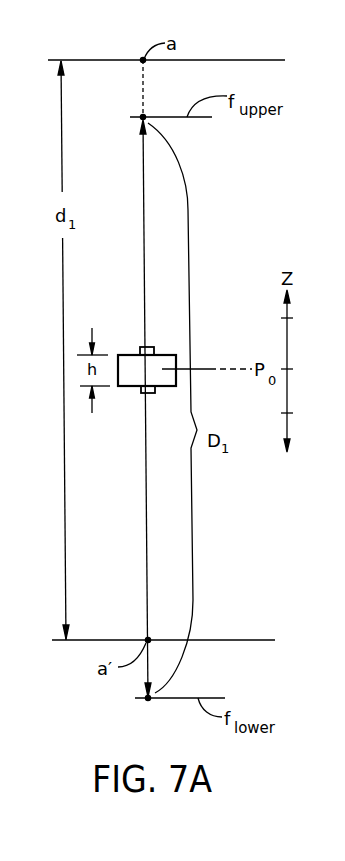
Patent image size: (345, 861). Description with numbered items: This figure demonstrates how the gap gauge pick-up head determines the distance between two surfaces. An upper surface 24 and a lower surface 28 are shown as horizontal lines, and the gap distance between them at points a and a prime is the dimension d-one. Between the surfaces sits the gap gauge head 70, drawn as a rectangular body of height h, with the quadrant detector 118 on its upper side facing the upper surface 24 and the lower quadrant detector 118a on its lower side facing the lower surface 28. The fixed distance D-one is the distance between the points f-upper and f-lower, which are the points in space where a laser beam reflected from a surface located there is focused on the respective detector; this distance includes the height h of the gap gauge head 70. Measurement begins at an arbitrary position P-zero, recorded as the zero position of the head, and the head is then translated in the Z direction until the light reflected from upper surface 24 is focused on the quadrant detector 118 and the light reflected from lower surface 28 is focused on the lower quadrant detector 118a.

The upper surface 24 is at (243, 60).
The lower surface 28 is at (232, 640).
The gap gauge head 70 is at (132, 354).
The quadrant detector 118 is at (149, 347).
The lower quadrant detector 118a is at (143, 394).